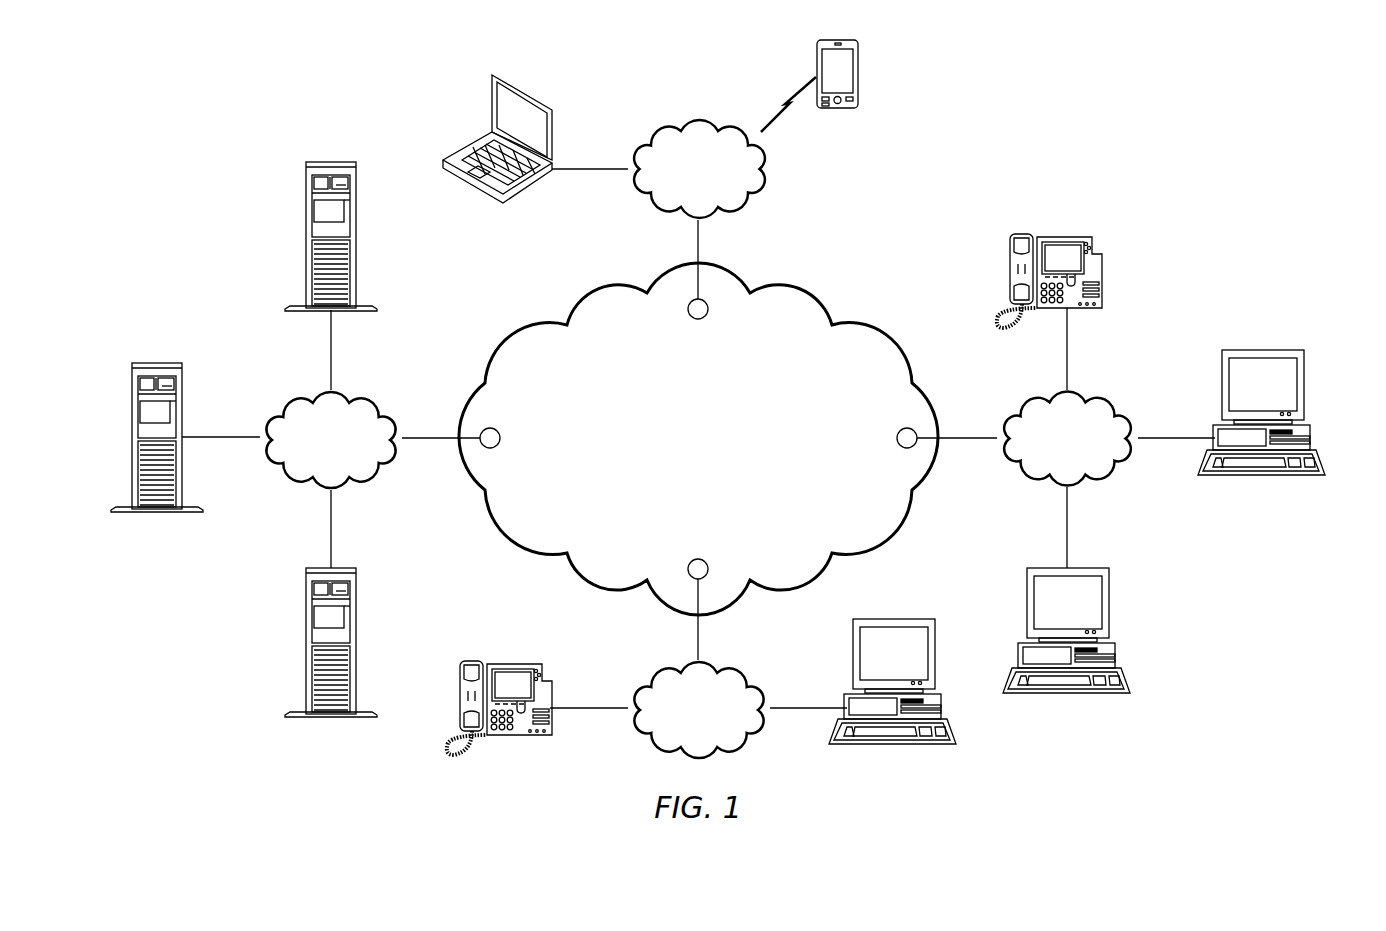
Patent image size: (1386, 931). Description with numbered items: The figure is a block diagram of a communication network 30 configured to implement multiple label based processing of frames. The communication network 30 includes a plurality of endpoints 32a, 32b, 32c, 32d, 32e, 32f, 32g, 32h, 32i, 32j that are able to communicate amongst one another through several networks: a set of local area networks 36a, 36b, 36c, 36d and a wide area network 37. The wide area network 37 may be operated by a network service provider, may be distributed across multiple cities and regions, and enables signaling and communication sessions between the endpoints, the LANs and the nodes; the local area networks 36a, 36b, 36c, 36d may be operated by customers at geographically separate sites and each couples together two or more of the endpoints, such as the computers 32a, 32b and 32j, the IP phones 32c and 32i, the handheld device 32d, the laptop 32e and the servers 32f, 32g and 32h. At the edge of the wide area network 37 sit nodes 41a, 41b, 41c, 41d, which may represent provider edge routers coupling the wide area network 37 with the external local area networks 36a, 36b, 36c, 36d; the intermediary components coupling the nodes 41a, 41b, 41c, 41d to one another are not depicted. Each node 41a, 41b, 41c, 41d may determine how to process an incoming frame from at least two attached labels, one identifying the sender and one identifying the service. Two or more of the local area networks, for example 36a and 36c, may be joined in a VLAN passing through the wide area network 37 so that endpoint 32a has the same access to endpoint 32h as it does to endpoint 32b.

The communication network 30 is at (206, 82).
The endpoint 32a is at (1066, 695).
The endpoint 32b is at (1262, 350).
The endpoint 32c is at (1068, 237).
The endpoint 32d is at (860, 72).
The endpoint 32e is at (473, 146).
The endpoint 32f is at (330, 161).
The endpoint 32g is at (158, 513).
The endpoint 32h is at (330, 718).
The endpoint 32i is at (516, 738).
The endpoint 32j is at (895, 748).
The local area network 36a is at (1051, 466).
The local area network 36b is at (682, 197).
The local area network 36c is at (315, 465).
The local area network 36d is at (682, 736).
The wide area network 37 is at (687, 467).
The node 41a is at (897, 438).
The node 41b is at (698, 320).
The node 41c is at (500, 438).
The node 41d is at (698, 558).